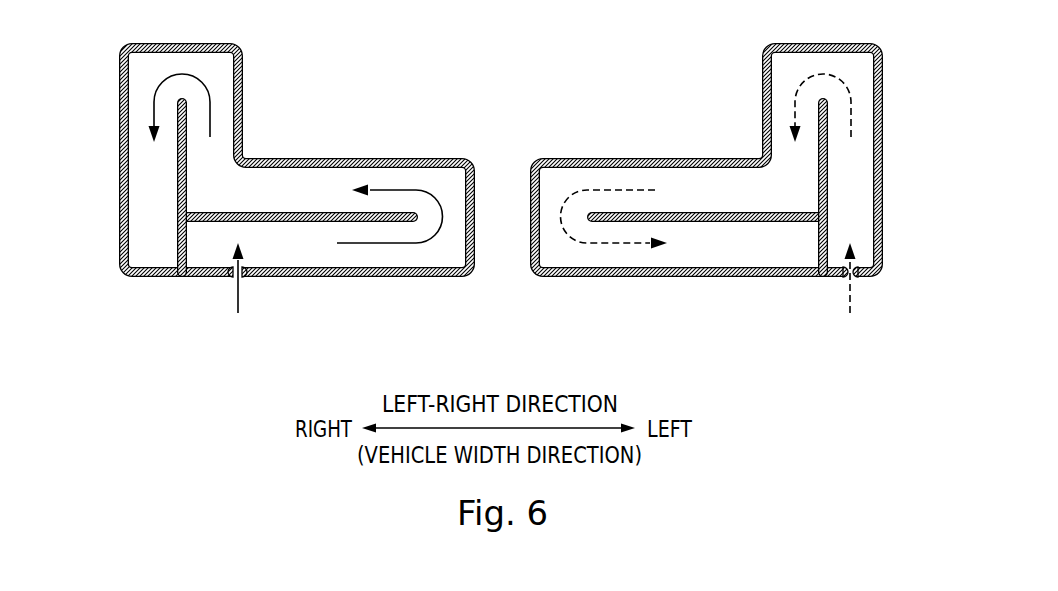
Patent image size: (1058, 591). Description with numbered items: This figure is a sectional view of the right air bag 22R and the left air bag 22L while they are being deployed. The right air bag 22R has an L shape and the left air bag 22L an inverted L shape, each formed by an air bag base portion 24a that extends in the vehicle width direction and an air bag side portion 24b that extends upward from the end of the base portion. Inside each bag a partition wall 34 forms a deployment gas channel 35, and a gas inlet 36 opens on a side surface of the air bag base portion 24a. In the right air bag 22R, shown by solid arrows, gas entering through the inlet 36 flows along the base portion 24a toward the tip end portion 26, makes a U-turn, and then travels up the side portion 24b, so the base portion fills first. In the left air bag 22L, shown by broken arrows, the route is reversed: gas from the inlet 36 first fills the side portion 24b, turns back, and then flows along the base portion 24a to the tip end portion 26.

The right air bag 22R is at (324, 136).
The left air bag 22L is at (680, 136).
The air bag base portion 24a is at (387, 158).
The air bag side portion 24b is at (119, 113).
The tip end portion 26 is at (479, 182).
The partition wall 34 is at (177, 190).
The deployment gas channel 35 is at (382, 253).
The gas inlet 36 is at (233, 276).